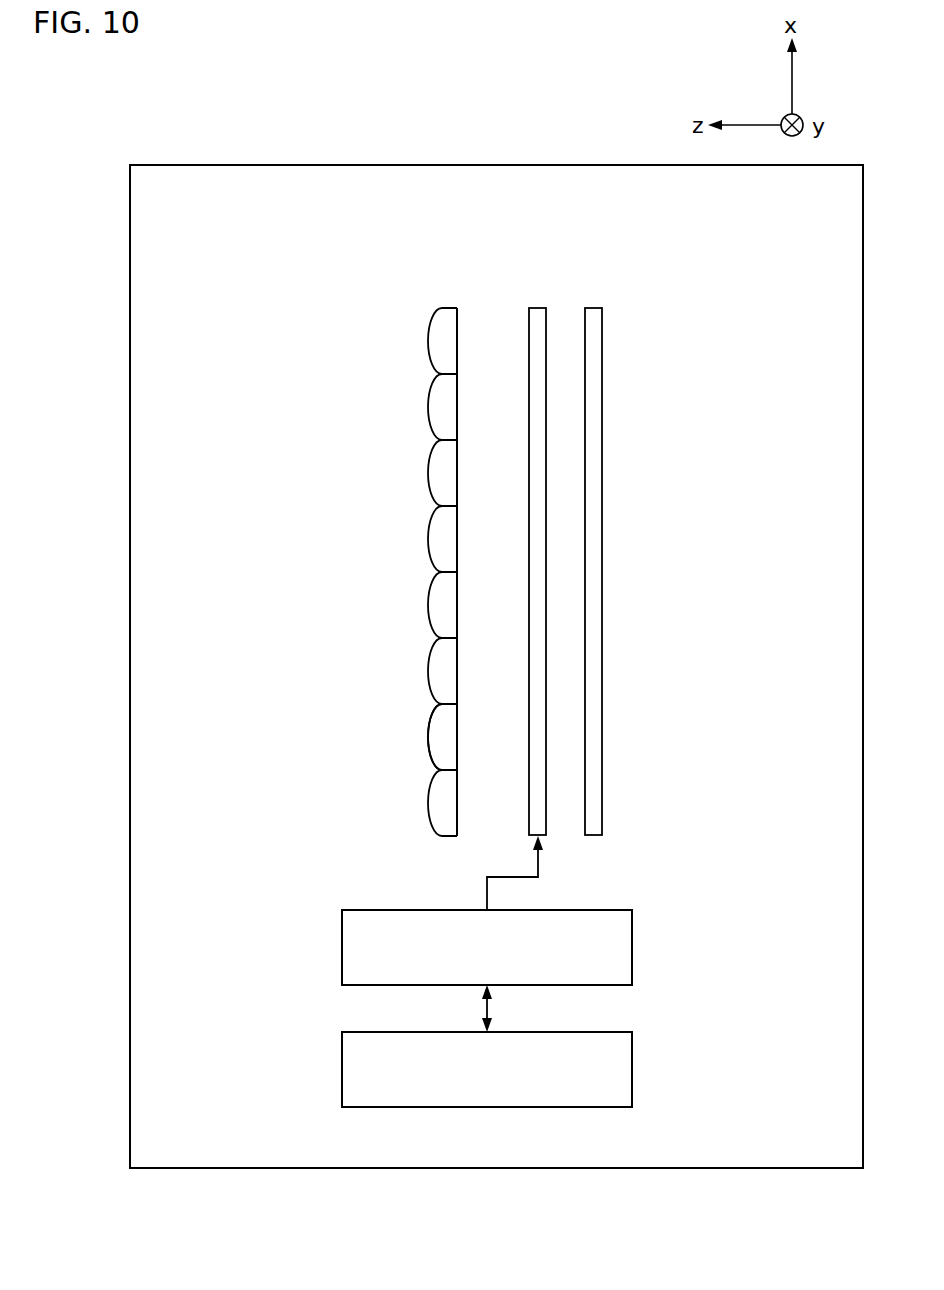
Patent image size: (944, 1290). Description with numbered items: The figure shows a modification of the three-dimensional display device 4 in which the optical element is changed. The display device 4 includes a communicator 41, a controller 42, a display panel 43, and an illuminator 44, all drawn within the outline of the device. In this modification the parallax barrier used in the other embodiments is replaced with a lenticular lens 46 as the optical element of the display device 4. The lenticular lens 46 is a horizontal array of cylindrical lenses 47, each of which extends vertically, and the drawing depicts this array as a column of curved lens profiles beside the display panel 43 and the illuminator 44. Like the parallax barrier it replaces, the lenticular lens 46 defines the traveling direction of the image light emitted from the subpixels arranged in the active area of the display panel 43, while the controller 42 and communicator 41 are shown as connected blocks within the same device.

The 3D display device 4 is at (130, 553).
The communicator 41 is at (342, 1069).
The controller 42 is at (342, 947).
The display panel 43 is at (536, 306).
The illuminator 44 is at (593, 306).
The lenticular lens 46 is at (420, 306).
The cylindrical lens 47 is at (429, 735).